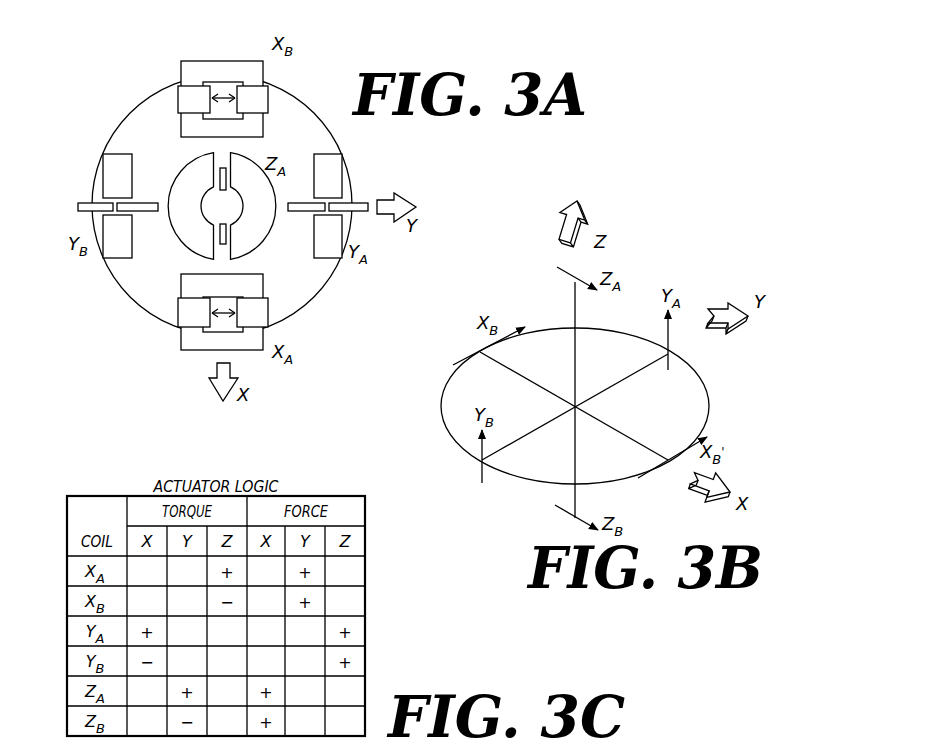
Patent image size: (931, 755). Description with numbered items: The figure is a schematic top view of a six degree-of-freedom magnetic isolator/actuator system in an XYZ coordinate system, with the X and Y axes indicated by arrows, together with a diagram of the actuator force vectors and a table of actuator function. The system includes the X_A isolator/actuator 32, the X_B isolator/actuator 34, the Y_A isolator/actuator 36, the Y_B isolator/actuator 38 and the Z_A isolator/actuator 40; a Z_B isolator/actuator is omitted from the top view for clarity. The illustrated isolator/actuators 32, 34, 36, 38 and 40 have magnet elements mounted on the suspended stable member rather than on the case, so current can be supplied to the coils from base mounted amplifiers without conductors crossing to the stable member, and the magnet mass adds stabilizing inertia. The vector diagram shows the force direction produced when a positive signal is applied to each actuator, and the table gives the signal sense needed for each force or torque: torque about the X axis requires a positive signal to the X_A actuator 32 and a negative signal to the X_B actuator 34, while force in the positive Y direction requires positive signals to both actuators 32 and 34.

The X_A isolator/actuator 32 is at (190, 352).
The X_B isolator/actuator 34 is at (207, 57).
The Y_A isolator/actuator 36 is at (353, 201).
The Y_B isolator/actuator 38 is at (90, 199).
The Z_A isolator/actuator 40 is at (218, 165).